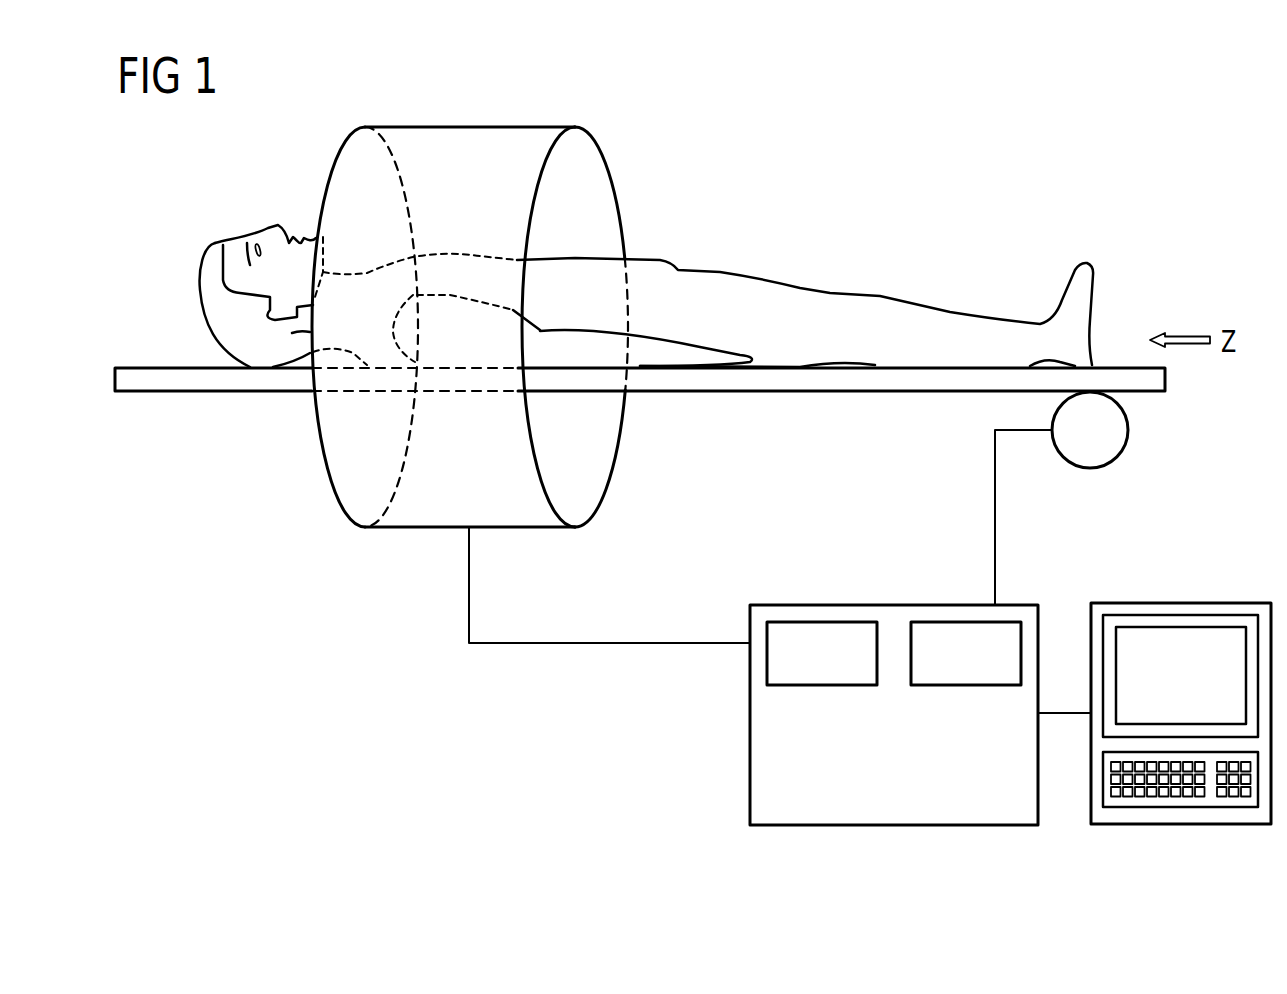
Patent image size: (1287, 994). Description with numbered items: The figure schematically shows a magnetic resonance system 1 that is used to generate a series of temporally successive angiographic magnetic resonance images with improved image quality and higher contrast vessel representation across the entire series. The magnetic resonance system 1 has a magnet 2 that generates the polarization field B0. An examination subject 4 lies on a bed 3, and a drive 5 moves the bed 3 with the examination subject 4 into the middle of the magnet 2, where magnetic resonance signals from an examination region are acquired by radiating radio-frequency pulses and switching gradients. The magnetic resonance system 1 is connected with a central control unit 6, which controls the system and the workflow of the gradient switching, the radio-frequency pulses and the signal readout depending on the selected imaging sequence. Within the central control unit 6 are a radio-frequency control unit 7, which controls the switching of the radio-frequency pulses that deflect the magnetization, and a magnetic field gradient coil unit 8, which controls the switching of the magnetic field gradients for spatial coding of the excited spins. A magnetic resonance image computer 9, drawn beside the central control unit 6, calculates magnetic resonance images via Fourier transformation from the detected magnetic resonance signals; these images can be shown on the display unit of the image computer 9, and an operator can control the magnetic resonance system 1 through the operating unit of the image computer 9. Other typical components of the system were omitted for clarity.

The magnetic resonance system 1 is at (647, 135).
The magnet 2 is at (463, 127).
The bed 3 is at (1160, 381).
The examination subject 4 is at (970, 323).
The drive 5 is at (1095, 468).
The central control unit 6 is at (750, 713).
The radio-frequency control unit 7 is at (822, 620).
The magnetic field gradient coil unit 8 is at (966, 620).
The magnetic resonance image computer 9 is at (1180, 603).